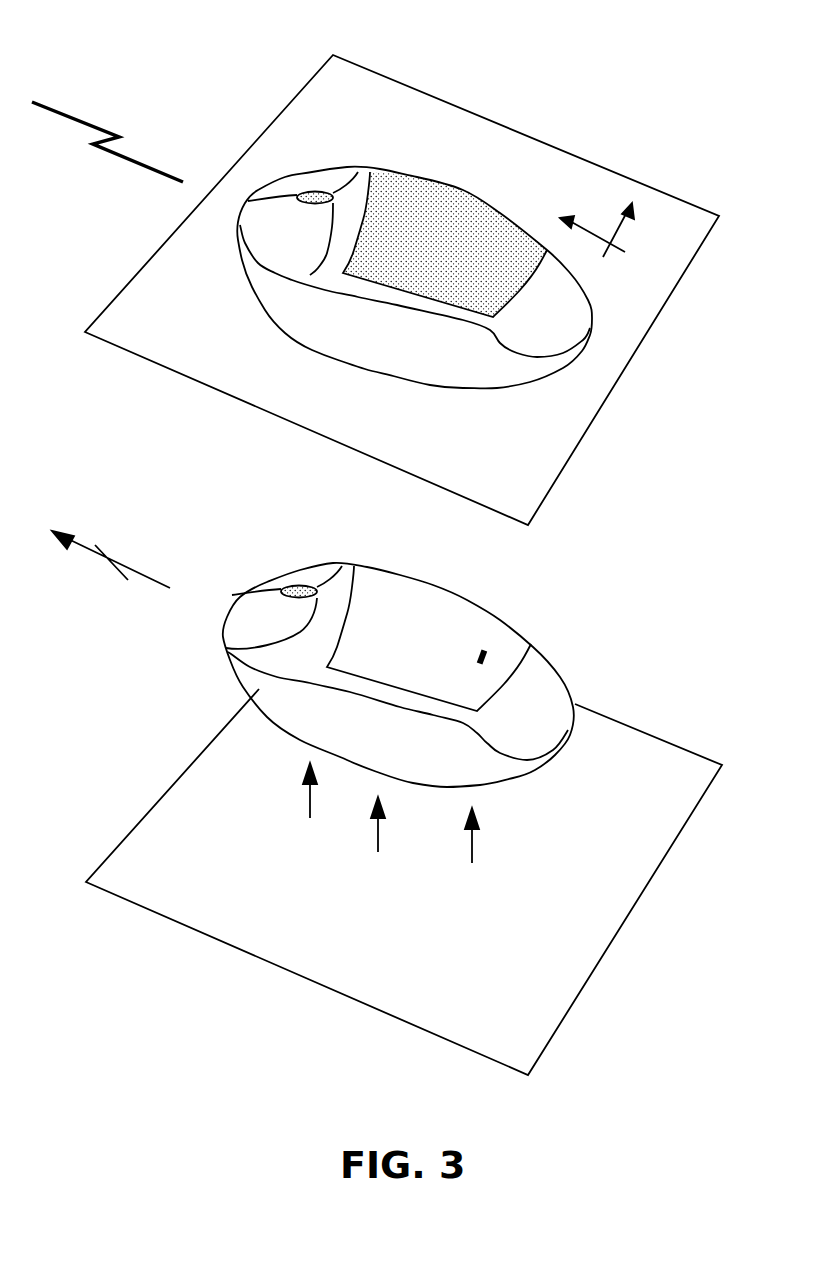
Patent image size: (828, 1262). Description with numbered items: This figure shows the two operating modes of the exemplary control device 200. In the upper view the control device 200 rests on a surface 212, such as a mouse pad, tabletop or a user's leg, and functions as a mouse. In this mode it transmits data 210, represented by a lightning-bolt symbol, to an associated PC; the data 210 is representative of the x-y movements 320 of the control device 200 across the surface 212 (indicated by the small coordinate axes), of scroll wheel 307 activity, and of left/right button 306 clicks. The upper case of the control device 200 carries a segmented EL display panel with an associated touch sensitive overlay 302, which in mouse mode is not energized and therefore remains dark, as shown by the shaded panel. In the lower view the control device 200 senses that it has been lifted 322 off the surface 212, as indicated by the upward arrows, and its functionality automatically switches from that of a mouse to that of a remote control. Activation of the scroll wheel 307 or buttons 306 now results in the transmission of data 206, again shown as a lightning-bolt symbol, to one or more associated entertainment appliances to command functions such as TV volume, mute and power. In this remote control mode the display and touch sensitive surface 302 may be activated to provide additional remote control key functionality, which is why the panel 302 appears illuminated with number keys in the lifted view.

The control device 200 is at (592, 322).
The surface 212 is at (170, 368).
The display with touch sensitive overlay 302 is at (420, 213).
The left/right buttons 306 is at (297, 183).
The scroll wheel 307 is at (322, 197).
The x-y movements 320 is at (595, 208).
The lifting off the surface 322 is at (475, 842).
The transmitted mouse data 210 is at (67, 115).
The transmitted remote control data 206 is at (80, 543).